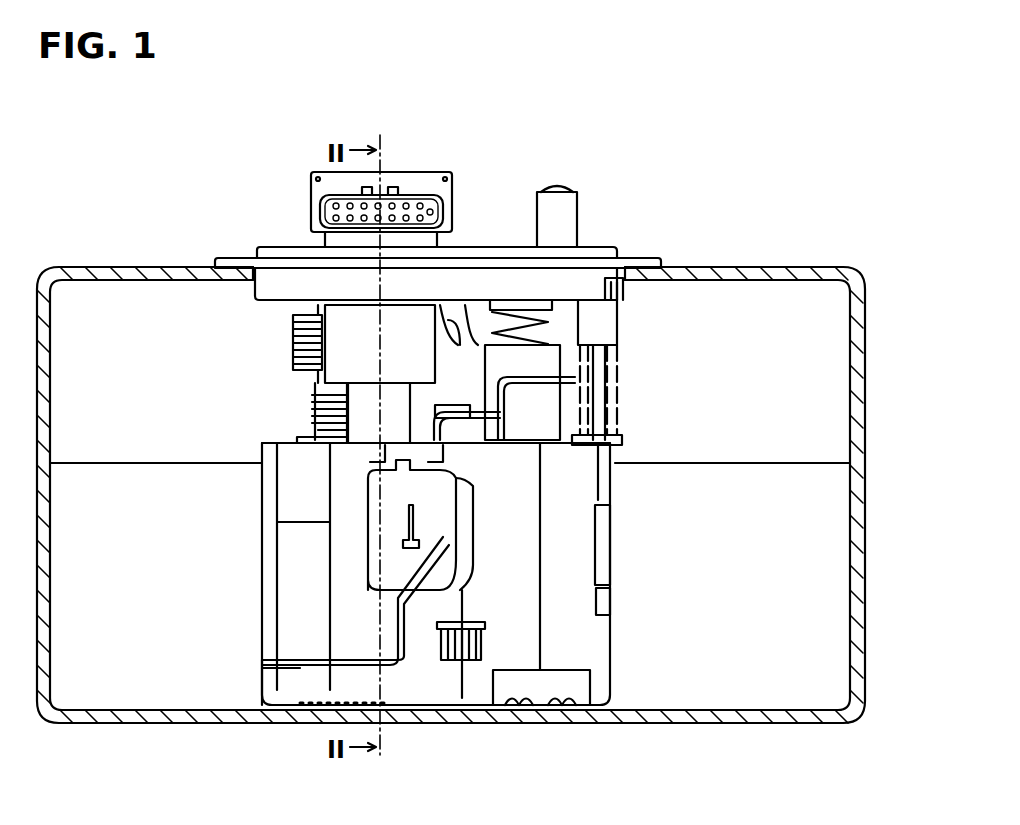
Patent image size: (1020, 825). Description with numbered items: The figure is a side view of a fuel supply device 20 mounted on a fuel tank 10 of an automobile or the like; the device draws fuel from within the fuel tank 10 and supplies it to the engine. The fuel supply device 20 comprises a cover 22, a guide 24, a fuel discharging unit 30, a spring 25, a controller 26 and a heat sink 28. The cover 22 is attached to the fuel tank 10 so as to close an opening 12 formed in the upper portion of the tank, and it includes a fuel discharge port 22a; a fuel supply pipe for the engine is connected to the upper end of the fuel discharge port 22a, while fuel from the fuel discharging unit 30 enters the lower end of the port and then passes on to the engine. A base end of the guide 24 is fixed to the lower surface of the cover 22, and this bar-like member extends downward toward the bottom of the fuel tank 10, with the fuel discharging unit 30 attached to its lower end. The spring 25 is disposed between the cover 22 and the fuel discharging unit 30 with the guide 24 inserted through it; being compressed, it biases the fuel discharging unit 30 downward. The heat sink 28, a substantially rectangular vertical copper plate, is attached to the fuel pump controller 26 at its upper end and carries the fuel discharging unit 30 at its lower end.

The fuel tank 10 is at (740, 267).
The opening 12 is at (256, 262).
The fuel supply device 20 is at (645, 136).
The cover 22 is at (630, 258).
The fuel discharge port 22a is at (577, 232).
The guide 24 is at (597, 393).
The spring 25 is at (618, 362).
The controller 26 is at (448, 174).
The heat sink 28 is at (352, 406).
The fuel discharging unit 30 is at (632, 572).